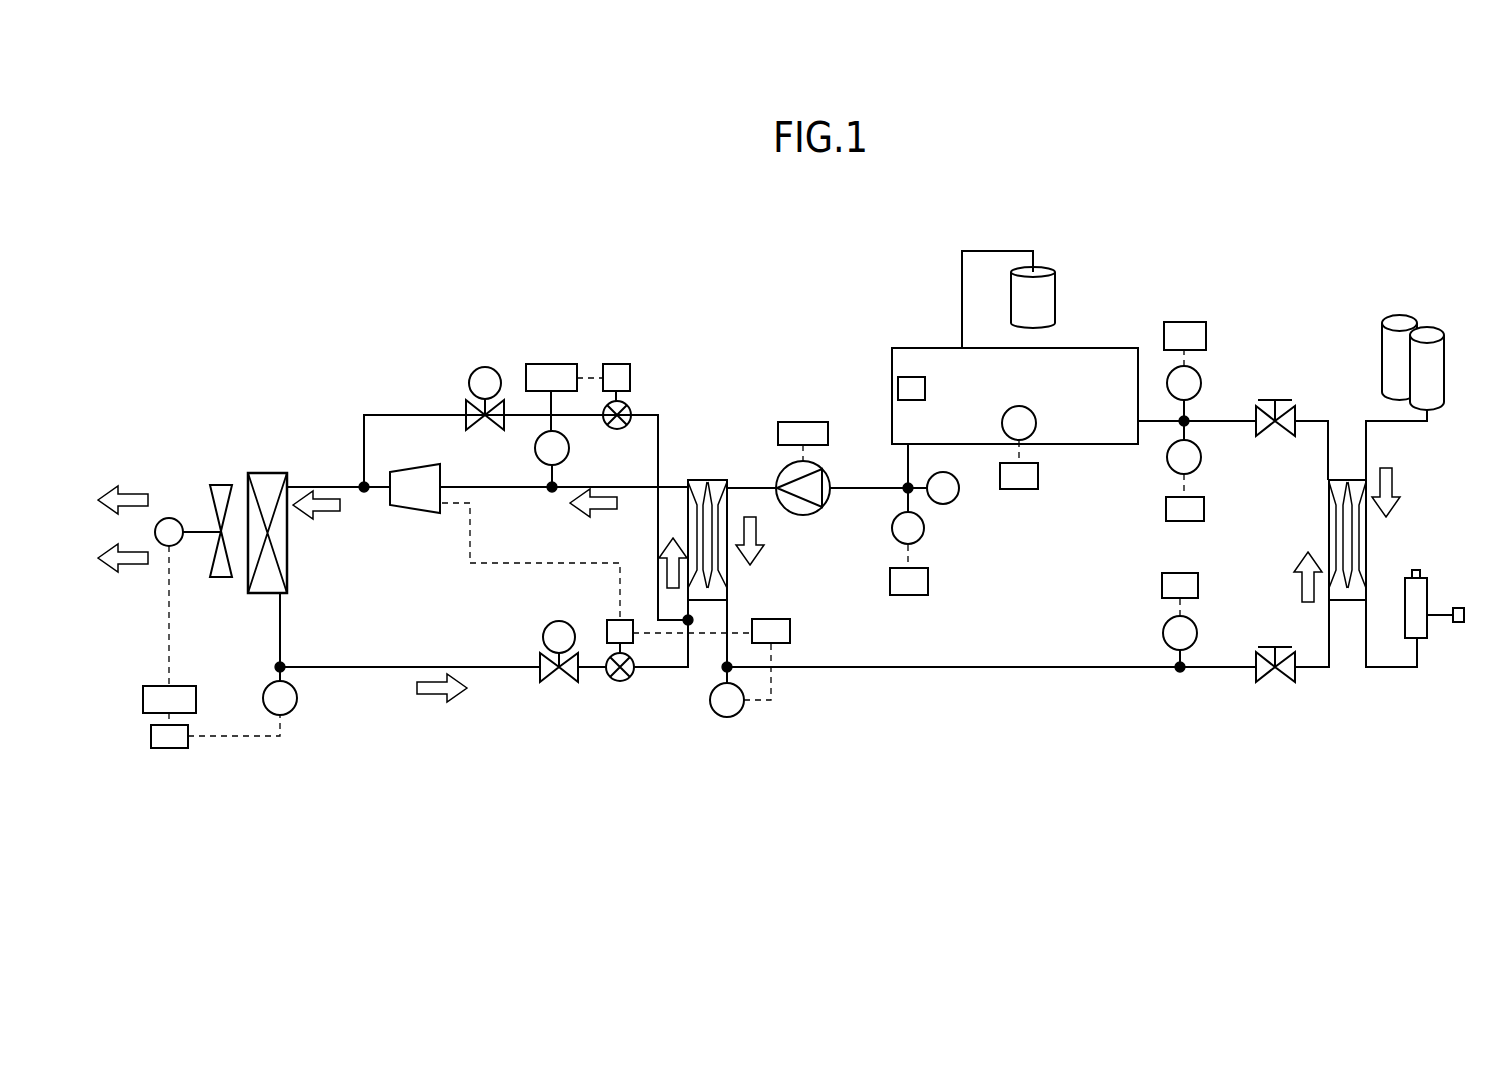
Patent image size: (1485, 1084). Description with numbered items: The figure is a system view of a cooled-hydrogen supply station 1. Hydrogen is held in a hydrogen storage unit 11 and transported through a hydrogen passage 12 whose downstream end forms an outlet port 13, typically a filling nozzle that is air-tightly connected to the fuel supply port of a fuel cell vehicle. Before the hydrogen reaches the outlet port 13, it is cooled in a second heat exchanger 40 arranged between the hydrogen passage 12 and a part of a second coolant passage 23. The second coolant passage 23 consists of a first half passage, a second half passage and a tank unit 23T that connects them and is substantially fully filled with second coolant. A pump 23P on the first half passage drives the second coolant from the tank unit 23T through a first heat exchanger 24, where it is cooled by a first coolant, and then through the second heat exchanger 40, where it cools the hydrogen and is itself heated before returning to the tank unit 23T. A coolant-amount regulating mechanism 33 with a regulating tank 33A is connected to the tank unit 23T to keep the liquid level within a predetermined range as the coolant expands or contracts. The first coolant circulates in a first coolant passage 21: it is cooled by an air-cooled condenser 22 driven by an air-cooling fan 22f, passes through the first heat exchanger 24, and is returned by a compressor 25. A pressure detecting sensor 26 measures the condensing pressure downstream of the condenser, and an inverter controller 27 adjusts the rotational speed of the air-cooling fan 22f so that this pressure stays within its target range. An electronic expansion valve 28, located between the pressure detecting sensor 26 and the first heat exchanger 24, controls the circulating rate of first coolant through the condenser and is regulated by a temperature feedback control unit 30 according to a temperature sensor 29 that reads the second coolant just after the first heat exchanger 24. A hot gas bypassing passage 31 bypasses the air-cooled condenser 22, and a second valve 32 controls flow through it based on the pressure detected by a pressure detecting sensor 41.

The cooled-hydrogen supply station 1 is at (1195, 238).
The hydrogen storage unit 11 is at (1447, 337).
The hydrogen passage 12 is at (1388, 423).
The outlet port 13 is at (1425, 640).
The first coolant passage 21 is at (313, 486).
The air-cooled condenser 22 is at (270, 473).
The air-cooling fan 22f is at (226, 484).
The second coolant passage 23 is at (866, 493).
The pump 23P is at (822, 474).
The tank unit 23T is at (1085, 444).
The first heat exchanger 24 is at (710, 480).
The compressor 25 is at (402, 472).
The pressure detecting sensor 26 is at (297, 698).
The inverter controller 27 is at (143, 708).
The electronic expansion valve 28 is at (617, 684).
The temperature sensor 29 is at (727, 717).
The temperature feedback control unit 30 is at (790, 620).
The hot gas bypassing passage 31 is at (400, 415).
The second valve 32 is at (631, 406).
The coolant-amount regulating mechanism 33 is at (930, 290).
The regulating tank 33A is at (1058, 293).
The second heat exchanger 40 is at (1330, 500).
The pressure detecting sensor 41 is at (570, 448).